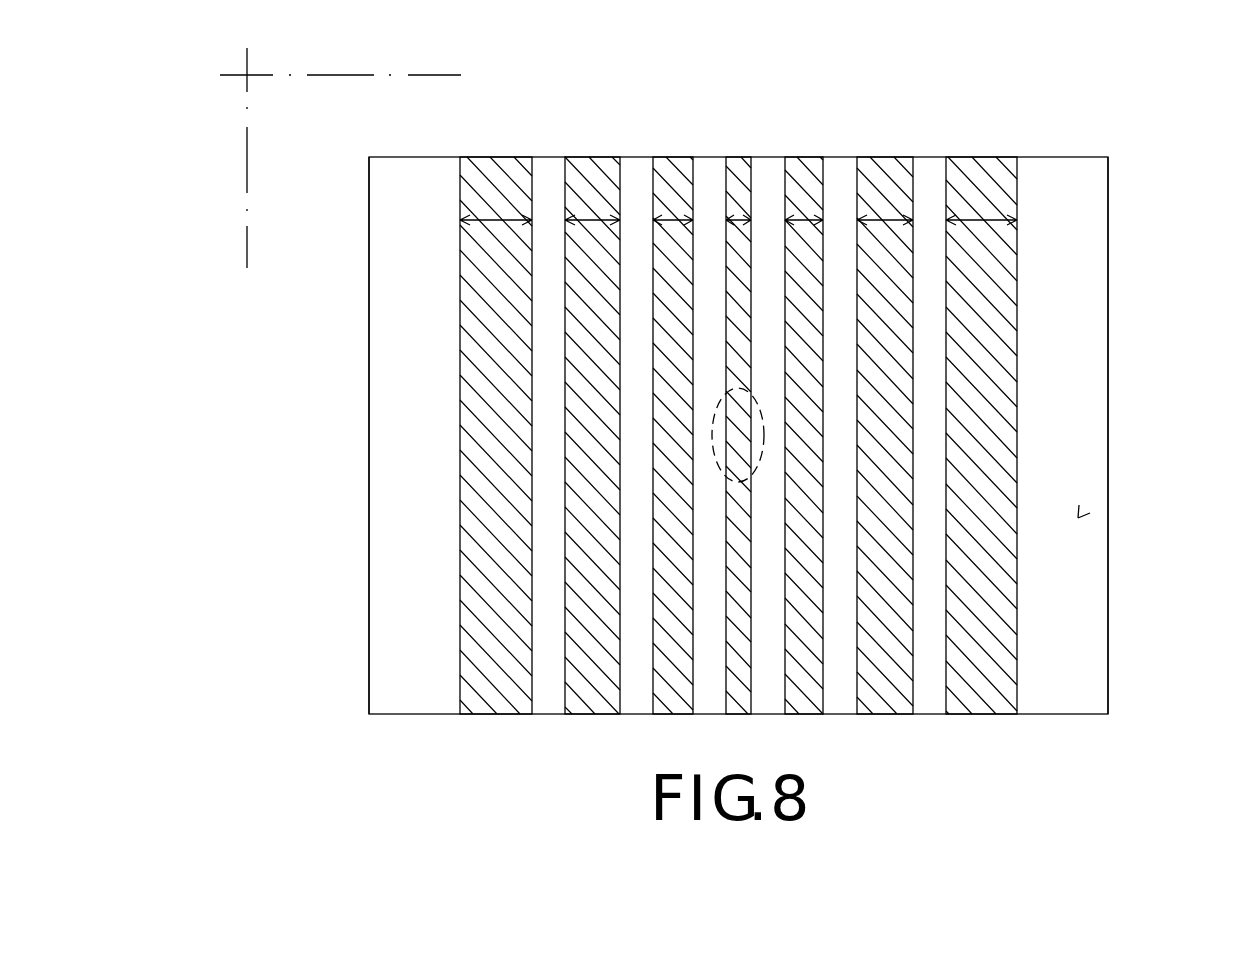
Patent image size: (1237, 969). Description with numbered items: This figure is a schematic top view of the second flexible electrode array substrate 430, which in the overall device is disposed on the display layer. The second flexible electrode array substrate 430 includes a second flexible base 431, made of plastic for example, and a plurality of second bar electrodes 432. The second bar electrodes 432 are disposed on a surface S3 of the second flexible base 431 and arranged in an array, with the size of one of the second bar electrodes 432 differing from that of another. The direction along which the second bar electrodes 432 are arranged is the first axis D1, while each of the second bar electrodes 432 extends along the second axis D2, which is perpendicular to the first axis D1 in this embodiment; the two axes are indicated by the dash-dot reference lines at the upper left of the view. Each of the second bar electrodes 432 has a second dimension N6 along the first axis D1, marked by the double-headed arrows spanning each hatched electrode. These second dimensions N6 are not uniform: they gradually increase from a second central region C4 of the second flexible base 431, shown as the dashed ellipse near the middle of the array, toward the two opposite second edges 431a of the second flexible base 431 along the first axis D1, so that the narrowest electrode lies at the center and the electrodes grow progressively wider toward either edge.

The second dimension N6 is at (498, 221).
The second bar electrodes 432 is at (1003, 255).
The second flexible base 431 is at (1087, 320).
The second edges 431a is at (357, 585).
The second central region C4 is at (758, 402).
The surface S3 is at (1078, 518).
The second flexible electrode array substrate 430 is at (1182, 672).
The first axis D1 is at (443, 75).
The second axis D2 is at (247, 243).